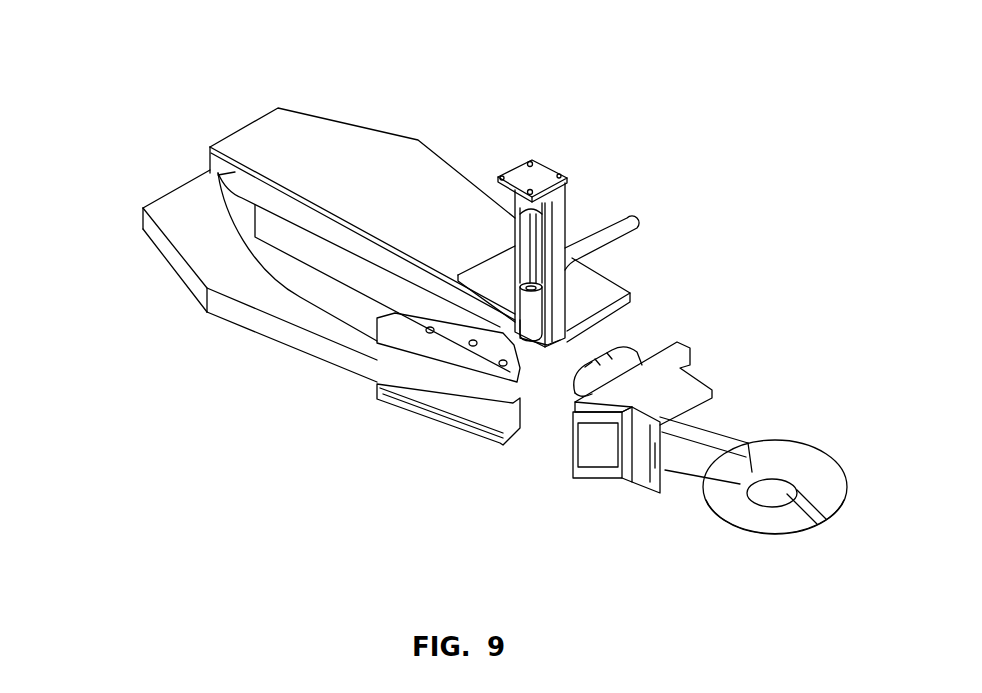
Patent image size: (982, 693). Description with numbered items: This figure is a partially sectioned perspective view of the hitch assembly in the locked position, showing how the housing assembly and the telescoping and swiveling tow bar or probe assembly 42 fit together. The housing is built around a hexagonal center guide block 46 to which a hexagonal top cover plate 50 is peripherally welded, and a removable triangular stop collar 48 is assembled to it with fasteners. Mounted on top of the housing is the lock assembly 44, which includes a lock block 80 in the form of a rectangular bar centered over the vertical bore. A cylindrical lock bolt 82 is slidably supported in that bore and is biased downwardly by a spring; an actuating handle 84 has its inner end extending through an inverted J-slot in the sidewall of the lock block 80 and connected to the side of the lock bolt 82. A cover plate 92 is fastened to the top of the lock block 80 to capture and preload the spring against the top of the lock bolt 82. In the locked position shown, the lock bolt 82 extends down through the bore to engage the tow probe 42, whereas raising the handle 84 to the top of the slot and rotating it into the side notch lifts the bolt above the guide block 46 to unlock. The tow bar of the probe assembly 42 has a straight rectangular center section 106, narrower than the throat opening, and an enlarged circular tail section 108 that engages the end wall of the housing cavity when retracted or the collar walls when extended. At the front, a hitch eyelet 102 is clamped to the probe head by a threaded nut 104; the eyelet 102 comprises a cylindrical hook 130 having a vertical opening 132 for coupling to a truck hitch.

The probe assembly 42 is at (657, 497).
The lock assembly 44 is at (572, 200).
The center guide block 46 is at (162, 243).
The stop collar 48 is at (412, 347).
The top cover plate 50 is at (278, 108).
The lock block 80 is at (558, 228).
The lock bolt 82 is at (533, 300).
The actuating handle 84 is at (600, 233).
The cover plate 92 is at (545, 160).
The hitch eyelet 102 is at (737, 435).
The threaded nut 104 is at (682, 327).
The center section 106 is at (323, 252).
The tail section 108 is at (237, 172).
The cylindrical hook 130 is at (797, 523).
The vertical opening 132 is at (790, 482).